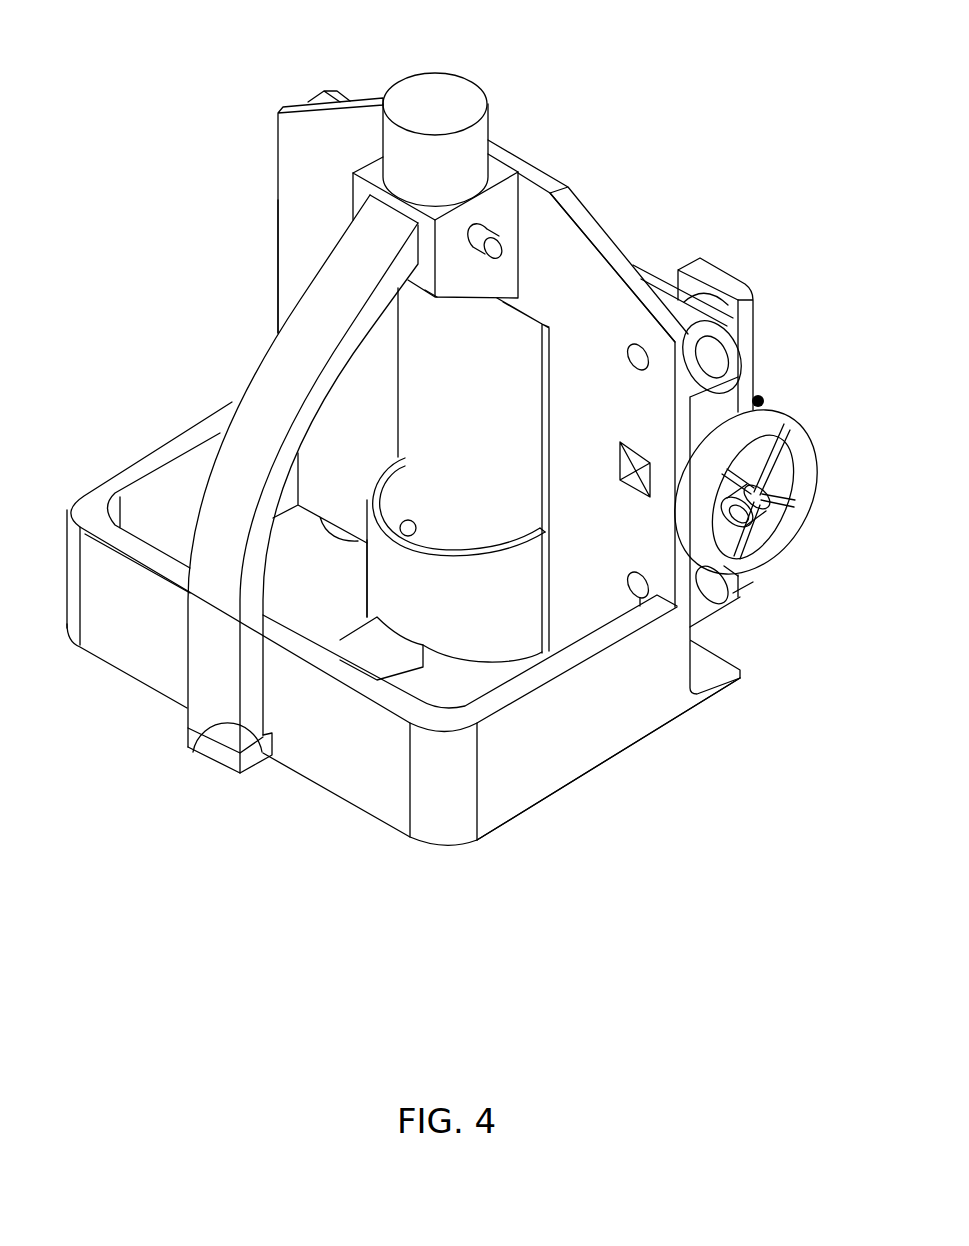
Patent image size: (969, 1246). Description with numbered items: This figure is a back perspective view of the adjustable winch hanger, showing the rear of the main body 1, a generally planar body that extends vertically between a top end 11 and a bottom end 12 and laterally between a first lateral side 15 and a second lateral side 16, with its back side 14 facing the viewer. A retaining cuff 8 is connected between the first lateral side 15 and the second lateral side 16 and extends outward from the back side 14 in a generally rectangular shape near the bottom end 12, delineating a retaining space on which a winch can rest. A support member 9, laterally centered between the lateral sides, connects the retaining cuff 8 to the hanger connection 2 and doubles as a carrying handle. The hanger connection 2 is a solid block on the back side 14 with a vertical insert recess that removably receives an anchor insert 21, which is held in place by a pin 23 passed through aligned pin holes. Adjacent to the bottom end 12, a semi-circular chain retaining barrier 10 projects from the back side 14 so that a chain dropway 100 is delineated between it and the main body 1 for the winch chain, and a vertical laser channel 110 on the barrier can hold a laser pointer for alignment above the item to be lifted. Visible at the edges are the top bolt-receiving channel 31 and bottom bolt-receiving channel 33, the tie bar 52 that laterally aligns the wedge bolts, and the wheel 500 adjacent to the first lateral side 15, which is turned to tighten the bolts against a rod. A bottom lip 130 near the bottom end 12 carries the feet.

The main body 1 is at (585, 255).
The hanger connection 2 is at (306, 166).
The retaining cuff 8 is at (118, 480).
The support member 9 is at (258, 388).
The chain retaining barrier 10 is at (370, 562).
The top end 11 is at (565, 145).
The bottom end 12 is at (731, 718).
The back side 14 is at (600, 536).
The first lateral side 15 is at (662, 420).
The second lateral side 16 is at (250, 246).
The anchor insert 21 is at (477, 102).
The pin 23 is at (500, 244).
The top bolt-receiving channel 31 is at (644, 268).
The bottom bolt-receiving channel 33 is at (732, 583).
The tie bar 52 is at (728, 274).
The chain dropway 100 is at (455, 520).
The laser channel 110 is at (411, 523).
The bottom lip 130 is at (740, 674).
The wheel 500 is at (792, 428).